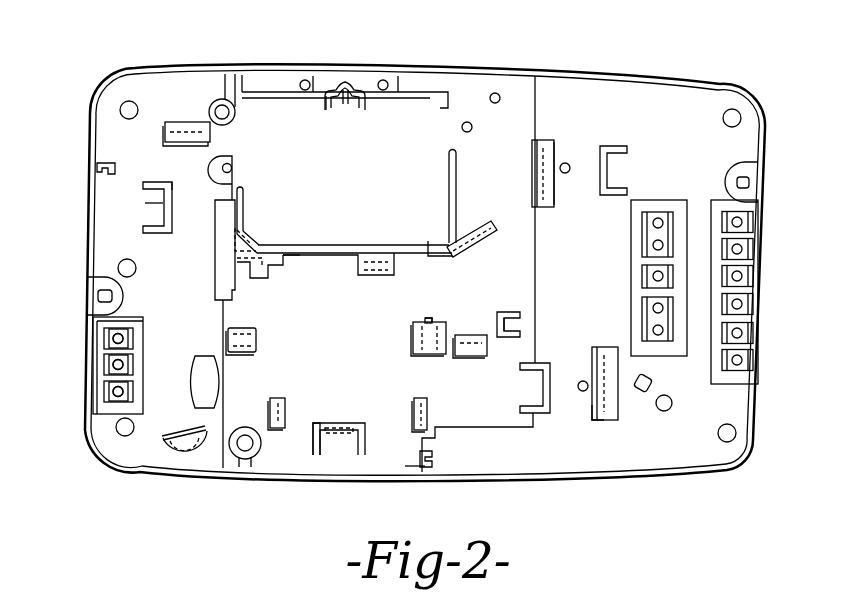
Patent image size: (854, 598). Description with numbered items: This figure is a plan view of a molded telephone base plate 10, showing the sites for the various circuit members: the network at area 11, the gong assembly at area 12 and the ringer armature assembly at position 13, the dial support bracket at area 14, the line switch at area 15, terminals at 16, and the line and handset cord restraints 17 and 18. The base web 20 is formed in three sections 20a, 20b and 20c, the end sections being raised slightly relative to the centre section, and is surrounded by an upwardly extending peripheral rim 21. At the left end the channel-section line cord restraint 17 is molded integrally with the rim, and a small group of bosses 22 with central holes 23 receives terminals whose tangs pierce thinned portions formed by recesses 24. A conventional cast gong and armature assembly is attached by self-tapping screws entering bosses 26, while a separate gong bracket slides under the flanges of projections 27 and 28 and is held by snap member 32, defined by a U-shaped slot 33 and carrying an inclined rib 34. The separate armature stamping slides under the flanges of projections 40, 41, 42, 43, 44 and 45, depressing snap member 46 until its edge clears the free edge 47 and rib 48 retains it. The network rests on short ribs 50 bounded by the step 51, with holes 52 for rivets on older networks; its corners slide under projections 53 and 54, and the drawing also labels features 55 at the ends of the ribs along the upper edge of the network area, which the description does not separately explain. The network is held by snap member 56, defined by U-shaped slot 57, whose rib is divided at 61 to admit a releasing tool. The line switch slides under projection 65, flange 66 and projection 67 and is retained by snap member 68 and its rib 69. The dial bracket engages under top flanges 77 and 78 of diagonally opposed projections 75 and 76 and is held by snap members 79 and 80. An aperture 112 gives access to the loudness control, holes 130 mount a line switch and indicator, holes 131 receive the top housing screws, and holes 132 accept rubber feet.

The telephone base plate 10 is at (366, 67).
The network position 11 is at (330, 185).
The gong assembly area 12 is at (168, 338).
The armature assembly position 13 is at (308, 390).
The dial support bracket position 14 is at (587, 157).
The line switch position 15 is at (456, 306).
The terminals position 16 is at (90, 425).
The line cord restraint 17 is at (96, 168).
The handset cord restraint 18 is at (430, 462).
The base web 20 is at (408, 466).
The end section of base web 20a is at (158, 275).
The centre section of base web 20b is at (352, 326).
The end section of base web 20c is at (575, 296).
The peripheral rim 21 is at (503, 72).
The bosses 22 is at (104, 388).
The central holes 23 is at (134, 366).
The recesses 24 is at (103, 334).
The bosses 26 is at (230, 98).
The projection 27 is at (180, 121).
The projection 28 is at (192, 445).
The snap member 32 is at (148, 202).
The U shaped slot 33 is at (148, 181).
The inclined rib 34 is at (172, 188).
The projection 40 is at (255, 274).
The projection 41 is at (360, 276).
The projection 42 is at (258, 340).
The projection 43 is at (412, 346).
The projection 44 is at (283, 430).
The projection 45 is at (410, 412).
The snap member 46 is at (347, 455).
The free edge 47 is at (346, 421).
The rib 48 is at (329, 437).
The ribs 50 is at (291, 92).
The step 51 is at (238, 159).
The holes 52 is at (233, 170).
The projection 53 is at (248, 235).
The projection 54 is at (441, 240).
The tab 55 is at (247, 90).
The snap member 56 is at (350, 103).
The U-shaped slot 57 is at (341, 84).
The tool insertion position 61 is at (340, 100).
The projection 65 is at (482, 252).
The flange 66 is at (440, 320).
The projection 67 is at (473, 350).
The snap member 68 is at (522, 322).
The rib 69 is at (505, 312).
The projection 75 is at (534, 138).
The projection 76 is at (618, 412).
The top flange 77 is at (557, 150).
The top flange 78 is at (586, 415).
The snap member 79 is at (622, 160).
The snap member 80 is at (524, 385).
The aperture 112 is at (197, 408).
The holes 130 is at (671, 403).
The holes 131 is at (99, 300).
The holes 132 is at (127, 101).